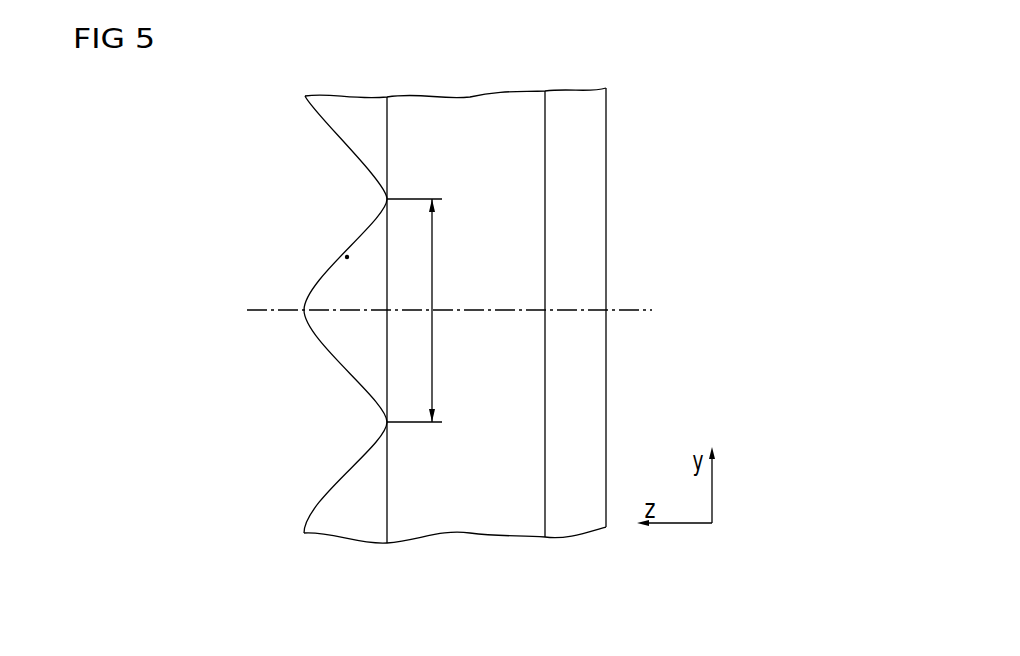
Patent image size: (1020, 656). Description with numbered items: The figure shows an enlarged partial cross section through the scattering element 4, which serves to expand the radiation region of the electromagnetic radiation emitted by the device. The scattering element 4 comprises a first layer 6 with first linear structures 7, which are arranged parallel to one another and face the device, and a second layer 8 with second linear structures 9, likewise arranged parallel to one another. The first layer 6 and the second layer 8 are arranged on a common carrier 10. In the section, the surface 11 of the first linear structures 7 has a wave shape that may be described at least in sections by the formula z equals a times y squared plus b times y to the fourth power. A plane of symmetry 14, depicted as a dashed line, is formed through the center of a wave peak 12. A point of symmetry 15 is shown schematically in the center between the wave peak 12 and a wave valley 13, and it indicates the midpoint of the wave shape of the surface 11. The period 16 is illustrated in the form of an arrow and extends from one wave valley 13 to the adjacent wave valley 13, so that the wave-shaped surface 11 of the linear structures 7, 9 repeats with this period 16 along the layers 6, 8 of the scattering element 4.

The scattering element 4 is at (420, 76).
The first layer 6 is at (280, 88).
The first linear structures 7 is at (313, 101).
The second layer 8 is at (630, 95).
The second linear structures 9 is at (573, 108).
The common carrier 10 is at (466, 100).
The surface 11 is at (370, 230).
The wave peak 12 is at (304, 307).
The wave valley 13 is at (386, 198).
The plane of symmetry 14 is at (247, 312).
The point of symmetry 15 is at (346, 256).
The period 16 is at (433, 277).